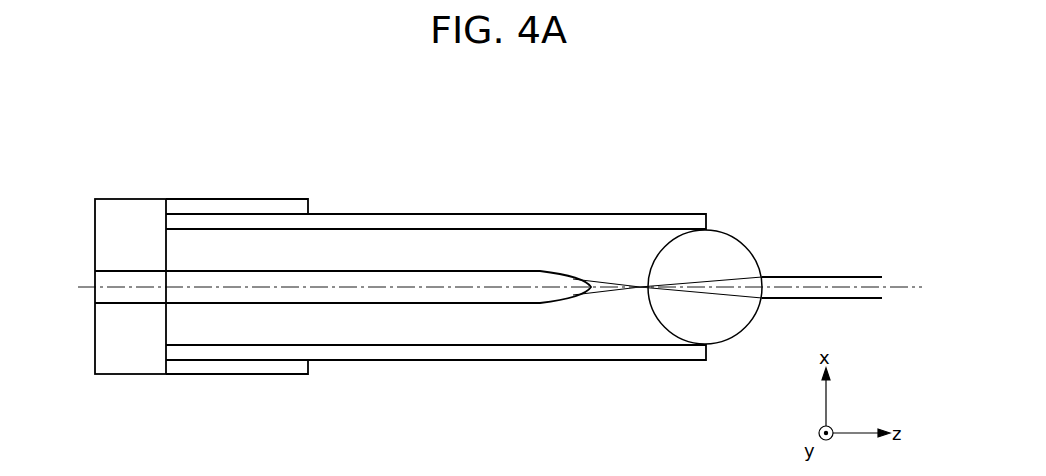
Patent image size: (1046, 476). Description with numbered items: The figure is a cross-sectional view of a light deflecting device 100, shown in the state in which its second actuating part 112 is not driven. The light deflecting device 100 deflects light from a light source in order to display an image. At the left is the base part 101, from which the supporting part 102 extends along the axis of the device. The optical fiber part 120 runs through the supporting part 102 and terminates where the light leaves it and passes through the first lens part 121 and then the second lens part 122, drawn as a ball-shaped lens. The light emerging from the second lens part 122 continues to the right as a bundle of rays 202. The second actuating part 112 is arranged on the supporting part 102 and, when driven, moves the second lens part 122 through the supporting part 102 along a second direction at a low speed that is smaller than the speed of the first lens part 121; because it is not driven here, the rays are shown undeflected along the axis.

The light deflecting device 100 is at (656, 166).
The base part 101 is at (130, 366).
The supporting part 102 is at (364, 218).
The second actuating part 112 is at (260, 201).
The optical fiber part 120 is at (444, 273).
The first lens part 121 is at (575, 272).
The second lens part 122 is at (740, 243).
The bundle of rays 202 is at (803, 275).